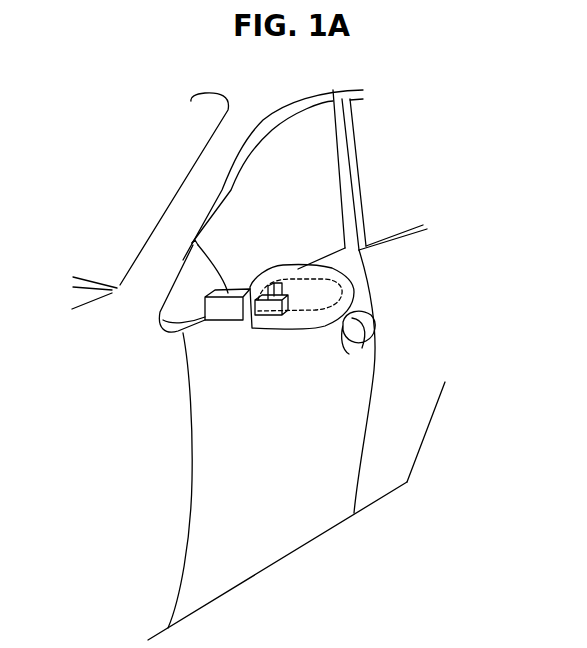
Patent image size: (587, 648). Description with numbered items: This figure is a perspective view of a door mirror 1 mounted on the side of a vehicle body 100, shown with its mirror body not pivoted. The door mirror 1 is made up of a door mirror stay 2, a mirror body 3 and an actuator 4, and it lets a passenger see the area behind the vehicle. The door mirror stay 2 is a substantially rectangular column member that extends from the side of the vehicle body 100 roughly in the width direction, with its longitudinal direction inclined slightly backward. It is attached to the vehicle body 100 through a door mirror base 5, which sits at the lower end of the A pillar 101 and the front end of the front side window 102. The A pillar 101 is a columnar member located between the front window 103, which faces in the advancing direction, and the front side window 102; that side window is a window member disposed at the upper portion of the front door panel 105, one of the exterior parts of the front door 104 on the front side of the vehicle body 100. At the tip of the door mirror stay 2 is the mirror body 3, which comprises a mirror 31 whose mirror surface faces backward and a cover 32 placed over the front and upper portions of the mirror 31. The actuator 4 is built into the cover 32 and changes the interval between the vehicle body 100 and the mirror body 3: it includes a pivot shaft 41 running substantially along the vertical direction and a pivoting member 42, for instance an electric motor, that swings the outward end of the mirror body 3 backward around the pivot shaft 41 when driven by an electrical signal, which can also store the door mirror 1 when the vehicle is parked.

The vehicle body 100 is at (259, 345).
The A pillar 101 is at (190, 190).
The front side window 102 is at (312, 160).
The front window 103 is at (191, 100).
The front door 104 is at (300, 548).
The front door panel 105 is at (340, 497).
The door mirror 1 is at (291, 331).
The door mirror stay 2 is at (227, 292).
The mirror body 3 is at (387, 295).
The mirror 31 is at (353, 275).
The cover 32 is at (355, 292).
The actuator 4 is at (190, 358).
The pivot shaft 41 is at (247, 295).
The pivoting member 42 is at (263, 327).
The door mirror base 5 is at (170, 300).